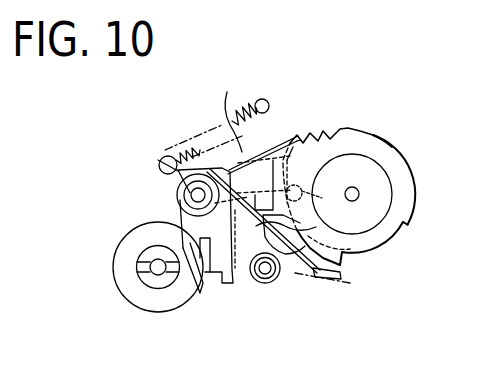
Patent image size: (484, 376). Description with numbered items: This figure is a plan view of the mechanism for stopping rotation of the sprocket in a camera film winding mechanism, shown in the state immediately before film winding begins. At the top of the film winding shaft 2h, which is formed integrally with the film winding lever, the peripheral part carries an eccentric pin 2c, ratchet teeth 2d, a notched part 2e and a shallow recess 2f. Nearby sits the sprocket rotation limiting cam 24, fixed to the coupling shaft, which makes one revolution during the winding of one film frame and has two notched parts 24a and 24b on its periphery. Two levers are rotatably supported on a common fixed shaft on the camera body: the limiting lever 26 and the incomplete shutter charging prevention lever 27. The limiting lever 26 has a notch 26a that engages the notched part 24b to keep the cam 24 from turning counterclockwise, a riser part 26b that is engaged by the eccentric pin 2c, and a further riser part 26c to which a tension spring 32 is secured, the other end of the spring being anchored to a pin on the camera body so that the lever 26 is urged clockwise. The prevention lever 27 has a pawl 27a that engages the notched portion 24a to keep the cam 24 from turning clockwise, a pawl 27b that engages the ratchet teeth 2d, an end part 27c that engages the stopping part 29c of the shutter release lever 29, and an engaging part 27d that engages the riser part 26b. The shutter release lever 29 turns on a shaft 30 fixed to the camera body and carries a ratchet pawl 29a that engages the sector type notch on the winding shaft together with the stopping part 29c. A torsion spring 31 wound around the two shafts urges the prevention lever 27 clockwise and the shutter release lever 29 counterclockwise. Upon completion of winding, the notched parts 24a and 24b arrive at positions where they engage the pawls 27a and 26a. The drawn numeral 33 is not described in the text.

The eccentric pin 2c is at (303, 197).
The ratchet teeth 2d is at (340, 128).
The notched part 2e is at (355, 270).
The shallow recess 2f is at (378, 137).
The film winding shaft 2h is at (396, 176).
The sprocket rotation limiting cam 24 is at (153, 312).
The notched part 24a is at (190, 244).
The notched part 24b is at (200, 293).
The limiting lever 26 is at (175, 192).
The notch 26a is at (238, 273).
The riser part 26b is at (316, 176).
The riser part 26c is at (160, 152).
The incomplete shutter charging prevention lever 27 is at (262, 168).
The pawl 27a is at (186, 223).
The pawl 27b is at (303, 135).
The end part 27c is at (278, 188).
The engaging part 27d is at (285, 150).
The shutter release lever 29 is at (292, 270).
The ratchet pawl 29a is at (340, 276).
The stopping part 29c is at (322, 222).
The shaft 30 is at (268, 284).
The torsion spring 31 is at (218, 124).
The tension spring 32 is at (237, 115).
The spring hook 33 is at (262, 99).